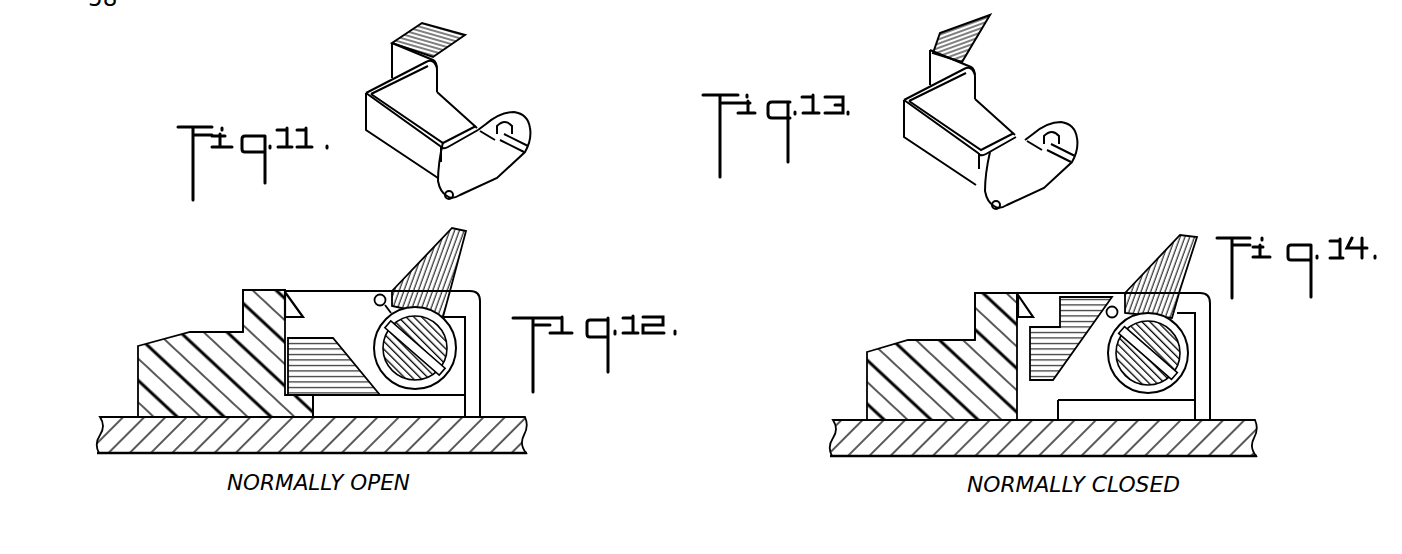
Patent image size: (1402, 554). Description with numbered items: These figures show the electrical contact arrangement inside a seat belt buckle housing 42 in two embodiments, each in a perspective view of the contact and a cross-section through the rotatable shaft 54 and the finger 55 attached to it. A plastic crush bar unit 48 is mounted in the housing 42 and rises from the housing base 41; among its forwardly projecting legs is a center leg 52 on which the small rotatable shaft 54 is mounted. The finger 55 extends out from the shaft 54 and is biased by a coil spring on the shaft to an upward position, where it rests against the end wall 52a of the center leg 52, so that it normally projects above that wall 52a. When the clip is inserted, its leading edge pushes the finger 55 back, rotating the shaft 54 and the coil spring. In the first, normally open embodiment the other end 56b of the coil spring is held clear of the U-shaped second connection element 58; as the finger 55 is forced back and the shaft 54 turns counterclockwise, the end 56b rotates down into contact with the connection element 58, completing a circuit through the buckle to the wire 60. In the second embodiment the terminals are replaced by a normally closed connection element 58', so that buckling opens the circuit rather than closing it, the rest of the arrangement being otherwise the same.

In FIG. 12, the housing base 41 is at (197, 452).
In FIG. 14, the housing base 41 is at (921, 452).
In FIG. 12, the housing 42 is at (156, 455).
In FIG. 14, the housing 42 is at (867, 460).
In FIG. 12, the plastic crush bar unit 48 is at (238, 309).
In FIG. 14, the plastic crush bar unit 48 is at (968, 305).
In FIG. 12, the center leg 52 is at (140, 358).
In FIG. 14, the center leg 52 is at (882, 363).
In FIG. 12, the end wall 52a is at (470, 293).
In FIG. 14, the end wall 52a is at (1196, 307).
In FIG. 12, the rotatable shaft 54 is at (443, 345).
In FIG. 14, the rotatable shaft 54 is at (1180, 352).
In FIG. 12, the finger 55 is at (455, 246).
In FIG. 14, the finger 55 is at (1188, 236).
In FIG. 12, the end of coil spring 56b is at (376, 296).
In FIG. 14, the end of coil spring 56b is at (1110, 306).
In FIG. 11, the second connection element 58 is at (433, 100).
In FIG. 12, the second connection element 58 is at (334, 347).
In FIG. 13, the normally closed terminal 58' is at (970, 100).
In FIG. 14, the normally closed terminal 58' is at (1071, 319).
In FIG. 11, the wire 60 is at (463, 180).
In FIG. 13, the wire 60 is at (1015, 180).